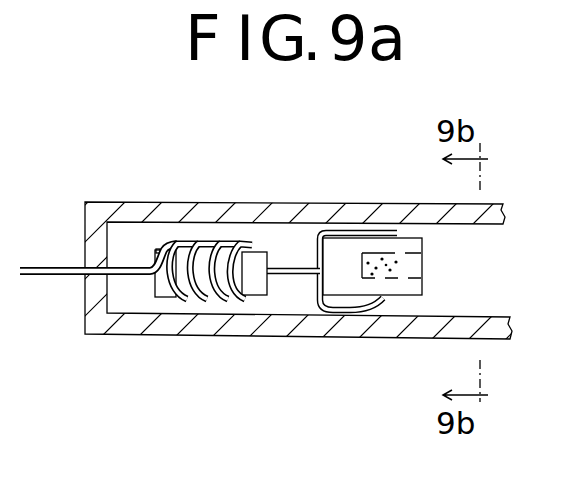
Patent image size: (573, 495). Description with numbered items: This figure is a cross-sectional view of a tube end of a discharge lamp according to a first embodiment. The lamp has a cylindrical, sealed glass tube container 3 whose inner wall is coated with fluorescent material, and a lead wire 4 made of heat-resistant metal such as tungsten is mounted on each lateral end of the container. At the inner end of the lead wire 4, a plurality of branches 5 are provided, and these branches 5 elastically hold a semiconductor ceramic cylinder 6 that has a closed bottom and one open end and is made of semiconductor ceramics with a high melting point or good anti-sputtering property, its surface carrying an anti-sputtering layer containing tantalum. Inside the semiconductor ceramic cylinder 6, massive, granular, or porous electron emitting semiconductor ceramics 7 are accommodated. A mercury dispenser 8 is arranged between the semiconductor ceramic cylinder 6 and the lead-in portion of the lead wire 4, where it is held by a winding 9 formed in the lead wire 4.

The glass tube container 3 is at (287, 211).
The lead wire 4 is at (38, 276).
The branches 5 is at (368, 230).
The semiconductor ceramic cylinder 6 is at (403, 283).
The electron emitting semiconductor ceramics 7 is at (398, 266).
The mercury dispenser 8 is at (168, 285).
The winding 9 is at (193, 242).